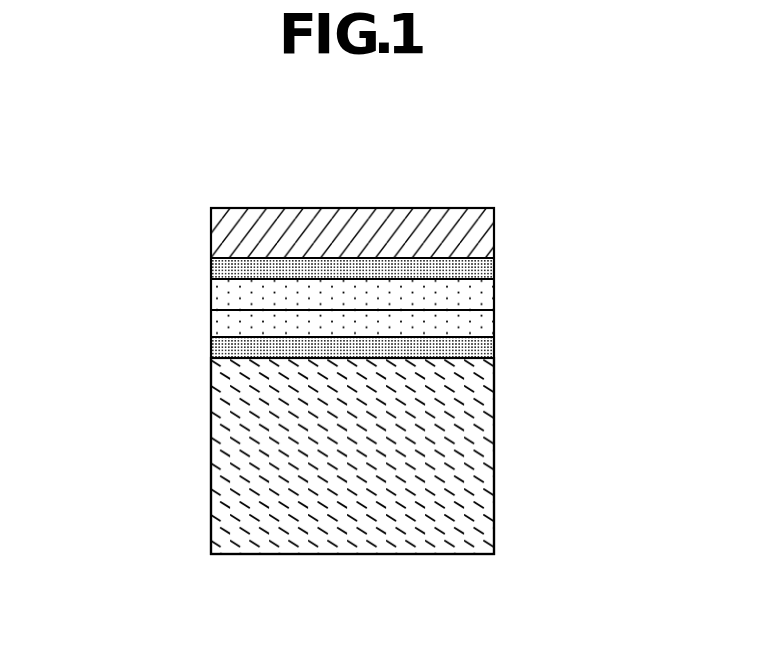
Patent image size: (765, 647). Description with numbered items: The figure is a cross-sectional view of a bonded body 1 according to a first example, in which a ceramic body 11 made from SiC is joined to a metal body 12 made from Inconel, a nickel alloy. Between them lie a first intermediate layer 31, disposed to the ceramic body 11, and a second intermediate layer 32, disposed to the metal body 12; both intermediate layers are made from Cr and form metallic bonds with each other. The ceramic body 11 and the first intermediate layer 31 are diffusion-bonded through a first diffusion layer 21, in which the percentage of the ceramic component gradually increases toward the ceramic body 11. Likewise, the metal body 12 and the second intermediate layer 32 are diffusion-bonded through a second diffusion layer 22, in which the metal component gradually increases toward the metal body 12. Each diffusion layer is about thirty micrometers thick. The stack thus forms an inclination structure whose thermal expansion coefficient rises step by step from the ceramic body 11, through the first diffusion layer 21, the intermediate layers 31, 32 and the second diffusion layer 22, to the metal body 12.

The bonded body 1 is at (502, 170).
The ceramic body 11 is at (457, 482).
The metal body 12 is at (473, 238).
The first diffusion layer 21 is at (218, 347).
The second diffusion layer 22 is at (218, 268).
The first intermediate layer 31 is at (470, 323).
The second intermediate layer 32 is at (473, 297).